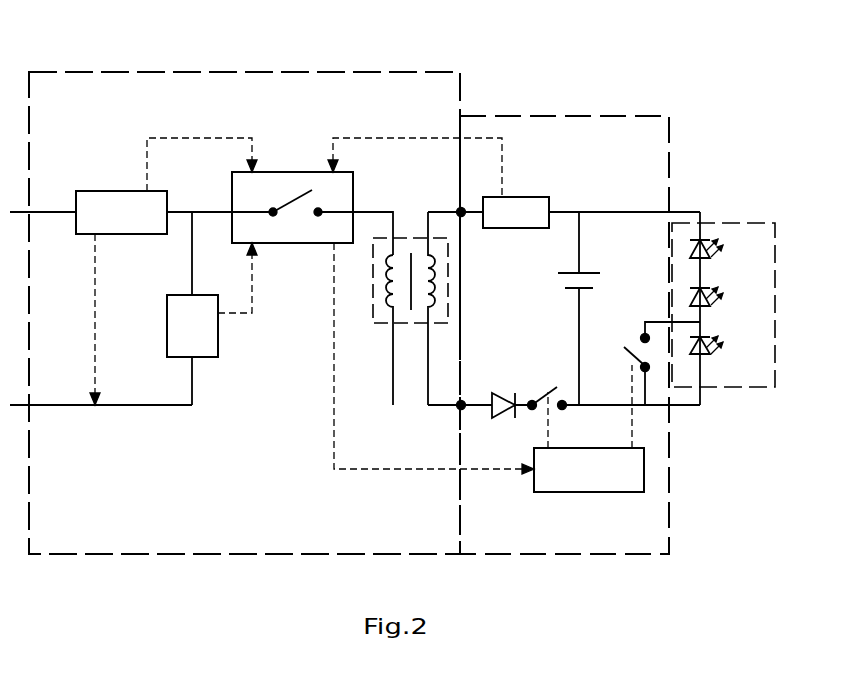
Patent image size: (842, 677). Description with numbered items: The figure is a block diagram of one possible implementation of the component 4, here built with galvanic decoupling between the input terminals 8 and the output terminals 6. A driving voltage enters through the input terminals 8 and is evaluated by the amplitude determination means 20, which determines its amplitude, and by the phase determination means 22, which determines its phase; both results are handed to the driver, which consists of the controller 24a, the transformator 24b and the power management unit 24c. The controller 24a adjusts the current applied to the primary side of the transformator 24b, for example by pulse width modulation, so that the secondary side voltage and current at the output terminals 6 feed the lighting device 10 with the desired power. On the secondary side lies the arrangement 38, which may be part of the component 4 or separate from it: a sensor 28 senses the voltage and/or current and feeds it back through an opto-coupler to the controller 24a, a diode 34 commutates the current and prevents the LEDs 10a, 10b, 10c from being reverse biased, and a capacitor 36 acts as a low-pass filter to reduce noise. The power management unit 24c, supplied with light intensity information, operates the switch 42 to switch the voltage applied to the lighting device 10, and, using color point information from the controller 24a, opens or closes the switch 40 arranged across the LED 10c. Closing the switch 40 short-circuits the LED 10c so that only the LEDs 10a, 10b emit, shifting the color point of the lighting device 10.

The component 4 is at (482, 82).
The arrangement 38 is at (632, 116).
The input terminals 8 is at (62, 212).
The amplitude determination means 20 is at (100, 191).
The phase determination means 22 is at (167, 337).
The controller 24a is at (300, 172).
The transformator 24b is at (380, 323).
The power management unit 24c is at (568, 492).
The output terminals 6 is at (458, 210).
The sensor 28 is at (537, 197).
The capacitor 36 is at (557, 285).
The diode 34 is at (512, 392).
The switch 42 is at (547, 386).
The switch 40 is at (633, 342).
The lighting device 10 is at (738, 223).
The LED 10a is at (710, 260).
The LED 10b is at (710, 308).
The LED 10c is at (710, 357).